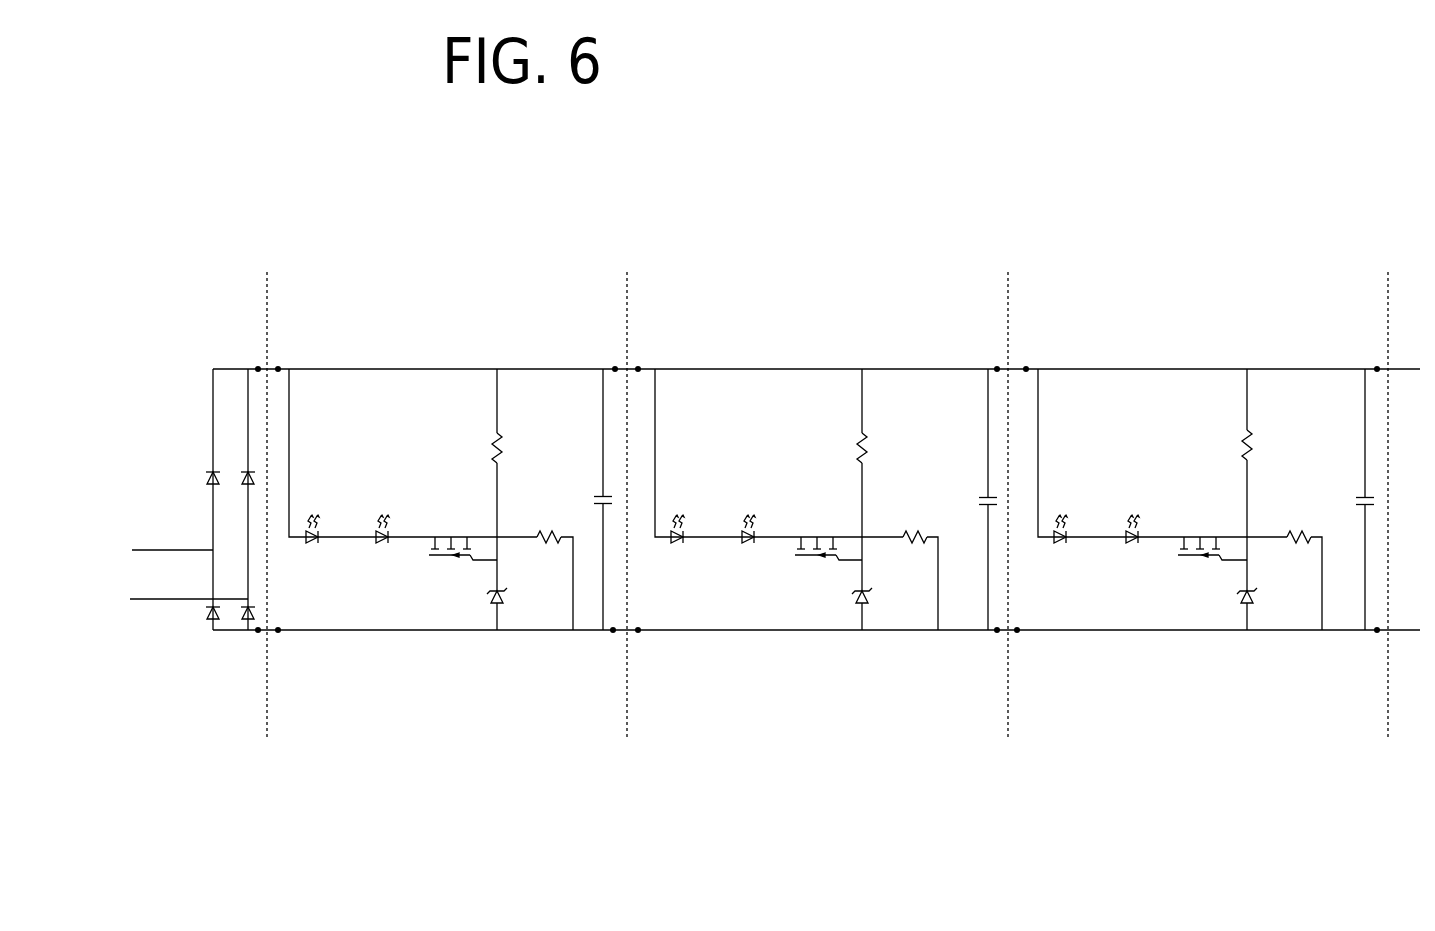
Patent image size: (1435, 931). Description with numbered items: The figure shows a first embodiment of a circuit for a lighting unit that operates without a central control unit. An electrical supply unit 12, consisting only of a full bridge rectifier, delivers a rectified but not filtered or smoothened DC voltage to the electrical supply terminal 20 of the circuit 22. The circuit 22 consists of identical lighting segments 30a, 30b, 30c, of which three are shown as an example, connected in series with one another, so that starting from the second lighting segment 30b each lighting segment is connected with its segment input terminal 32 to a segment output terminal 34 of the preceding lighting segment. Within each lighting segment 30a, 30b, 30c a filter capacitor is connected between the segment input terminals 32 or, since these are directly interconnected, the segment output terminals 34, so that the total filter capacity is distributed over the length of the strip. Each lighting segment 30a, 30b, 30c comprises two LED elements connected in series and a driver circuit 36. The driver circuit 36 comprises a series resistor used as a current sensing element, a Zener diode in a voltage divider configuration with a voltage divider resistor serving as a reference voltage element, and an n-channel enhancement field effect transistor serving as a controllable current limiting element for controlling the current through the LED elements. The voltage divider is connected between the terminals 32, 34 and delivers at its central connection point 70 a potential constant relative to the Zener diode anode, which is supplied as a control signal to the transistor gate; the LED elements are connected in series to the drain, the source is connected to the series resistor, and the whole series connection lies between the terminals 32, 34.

The electrical supply unit 12 is at (201, 311).
The electrical supply terminal 20 is at (258, 367).
The circuit 22 is at (814, 619).
The first lighting segment 30a is at (450, 577).
The second lighting segment 30b is at (780, 692).
The third lighting segment 30c is at (1206, 578).
The segment input terminal 32 is at (278, 367).
The segment output terminal 34 is at (615, 367).
The driver circuit 36 is at (570, 647).
The central connection point 70 is at (499, 561).